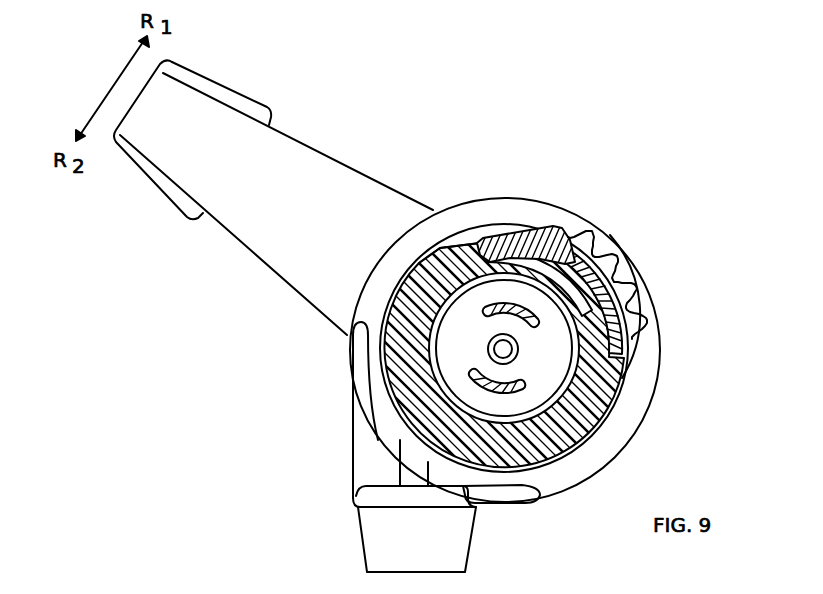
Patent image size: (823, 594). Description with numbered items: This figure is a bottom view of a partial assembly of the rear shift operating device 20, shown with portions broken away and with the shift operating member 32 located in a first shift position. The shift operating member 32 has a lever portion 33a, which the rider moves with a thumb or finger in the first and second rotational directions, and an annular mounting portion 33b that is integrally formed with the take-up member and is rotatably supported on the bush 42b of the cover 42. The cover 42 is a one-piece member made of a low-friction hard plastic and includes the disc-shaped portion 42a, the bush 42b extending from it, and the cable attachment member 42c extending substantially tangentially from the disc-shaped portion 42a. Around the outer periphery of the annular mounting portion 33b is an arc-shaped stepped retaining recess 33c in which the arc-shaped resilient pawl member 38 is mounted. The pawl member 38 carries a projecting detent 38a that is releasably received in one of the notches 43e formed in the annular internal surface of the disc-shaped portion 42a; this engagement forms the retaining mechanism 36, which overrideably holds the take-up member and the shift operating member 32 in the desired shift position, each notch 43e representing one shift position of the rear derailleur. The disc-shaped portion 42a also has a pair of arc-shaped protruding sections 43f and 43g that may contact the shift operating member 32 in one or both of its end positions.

The rear shift operating device 20 is at (628, 160).
The shift operating member 32 is at (322, 124).
The lever portion 33a is at (352, 208).
The annular mounting portion 33b is at (565, 436).
The retaining recess 33c is at (626, 347).
The retaining mechanism 36 is at (462, 236).
The pawl member 38 is at (596, 262).
The detent 38a is at (561, 230).
The cover 42 is at (662, 388).
The disc-shaped portion 42a is at (632, 414).
The bush 42b is at (461, 345).
The cable attachment member 42c is at (384, 536).
The notches 43e is at (612, 303).
The arc-shaped protruding section 43f is at (360, 370).
The arc-shaped protruding section 43g is at (507, 494).